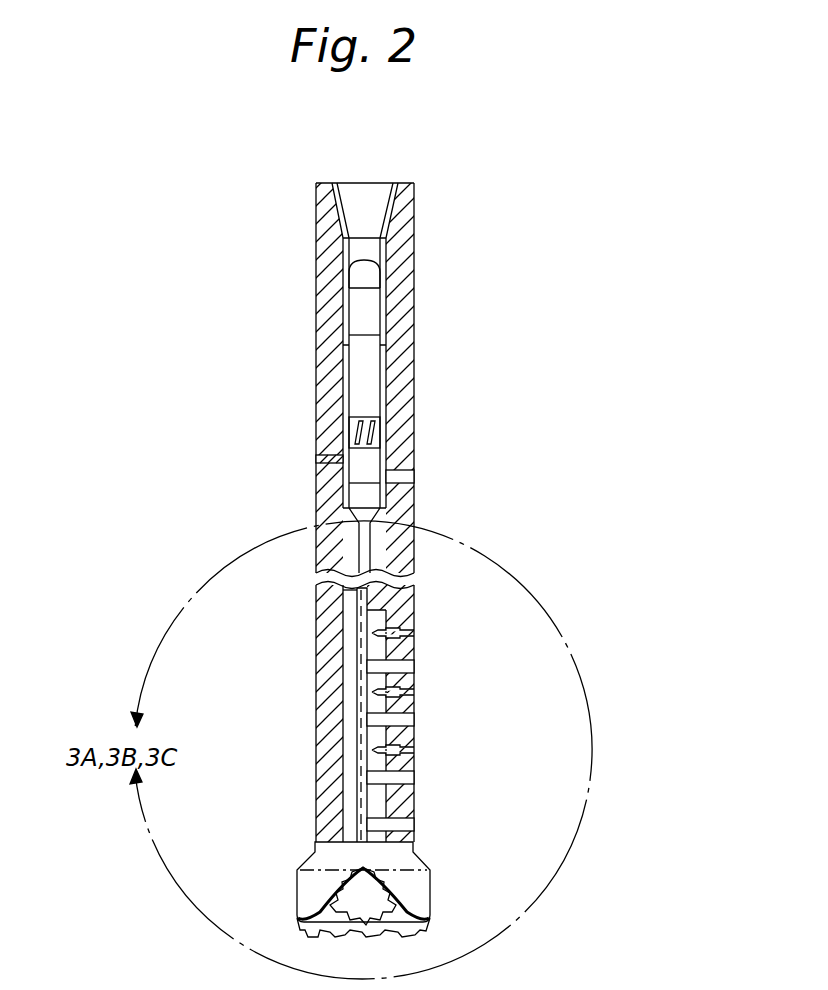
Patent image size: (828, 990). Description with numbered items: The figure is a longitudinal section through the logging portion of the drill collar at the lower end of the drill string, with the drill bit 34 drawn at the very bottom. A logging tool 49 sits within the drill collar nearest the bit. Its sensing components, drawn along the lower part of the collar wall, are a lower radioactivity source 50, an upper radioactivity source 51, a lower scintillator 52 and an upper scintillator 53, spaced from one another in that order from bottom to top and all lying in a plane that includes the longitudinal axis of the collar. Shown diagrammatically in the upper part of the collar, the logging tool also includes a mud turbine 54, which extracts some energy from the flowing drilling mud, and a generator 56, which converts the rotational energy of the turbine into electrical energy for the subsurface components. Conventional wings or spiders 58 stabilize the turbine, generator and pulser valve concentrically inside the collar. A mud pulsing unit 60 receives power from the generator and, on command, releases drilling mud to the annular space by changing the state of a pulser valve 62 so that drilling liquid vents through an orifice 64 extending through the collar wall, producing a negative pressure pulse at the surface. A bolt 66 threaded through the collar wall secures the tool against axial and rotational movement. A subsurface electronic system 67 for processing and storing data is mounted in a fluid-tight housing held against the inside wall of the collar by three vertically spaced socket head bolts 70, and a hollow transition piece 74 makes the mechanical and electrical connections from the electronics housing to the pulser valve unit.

The drill bit 34 is at (434, 882).
The logging tool 49 is at (357, 602).
The lower radioactivity source 50 is at (416, 825).
The upper radioactivity source 51 is at (416, 778).
The lower scintillator 52 is at (416, 720).
The upper scintillator 53 is at (416, 667).
The mud turbine 54 is at (370, 268).
The generator 56 is at (365, 318).
The wings or spiders 58 is at (345, 350).
The mud pulsing unit 60 is at (375, 440).
The pulser valve 62 is at (365, 466).
The orifice 64 is at (390, 476).
The bolt 66 is at (330, 452).
The subsurface electronic system 67 is at (345, 648).
The socket head bolts 70 is at (380, 634).
The hollow transition piece 74 is at (372, 548).